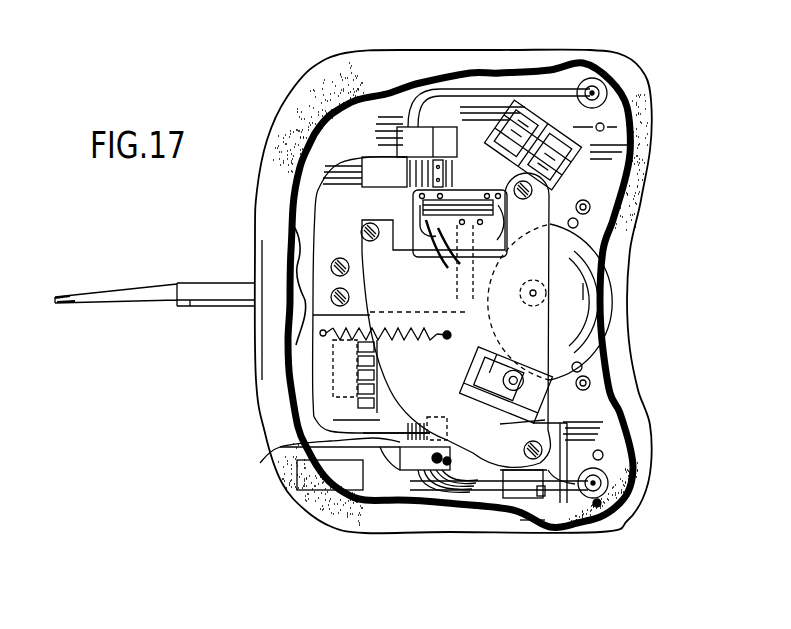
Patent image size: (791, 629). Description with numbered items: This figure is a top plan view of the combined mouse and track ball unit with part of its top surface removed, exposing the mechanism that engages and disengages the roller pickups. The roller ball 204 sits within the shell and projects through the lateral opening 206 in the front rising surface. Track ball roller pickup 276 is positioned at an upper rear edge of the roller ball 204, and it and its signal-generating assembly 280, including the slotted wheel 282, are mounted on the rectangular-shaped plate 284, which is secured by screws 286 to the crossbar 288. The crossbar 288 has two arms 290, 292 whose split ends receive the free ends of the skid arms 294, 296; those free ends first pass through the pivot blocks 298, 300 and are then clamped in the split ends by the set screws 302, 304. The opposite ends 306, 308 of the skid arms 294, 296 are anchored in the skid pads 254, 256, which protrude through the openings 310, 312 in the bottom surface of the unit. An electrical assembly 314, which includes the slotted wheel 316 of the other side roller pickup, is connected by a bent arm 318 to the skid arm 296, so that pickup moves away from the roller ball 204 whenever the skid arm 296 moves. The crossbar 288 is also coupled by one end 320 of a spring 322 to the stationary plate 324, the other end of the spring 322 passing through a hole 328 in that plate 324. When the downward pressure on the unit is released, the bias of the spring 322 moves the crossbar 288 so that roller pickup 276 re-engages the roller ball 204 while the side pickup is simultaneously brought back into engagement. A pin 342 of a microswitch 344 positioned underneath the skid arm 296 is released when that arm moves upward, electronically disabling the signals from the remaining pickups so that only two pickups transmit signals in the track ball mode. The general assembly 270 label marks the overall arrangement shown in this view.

The tool housing assembly 270 is at (62, 5).
The skid pad 254 is at (610, 523).
The skid pad 256 is at (602, 96).
The opening 312 is at (607, 103).
The opposite end of skid arm 306 is at (592, 93).
The signal-generating assembly 280 is at (470, 172).
The set screw 302 is at (428, 127).
The pivot block 298 is at (380, 150).
The arm of crossbar 290 is at (383, 170).
The crossbar 288 is at (335, 202).
The arm of crossbar 292 is at (285, 447).
The screws 286 is at (290, 262).
The rectangular-shaped plate 284 is at (305, 308).
The stationary plate 324 is at (441, 379).
The skid arm 294 is at (458, 188).
The slotted wheel 282 is at (414, 215).
The roller ball 204 is at (578, 300).
The lateral opening 206 is at (617, 254).
The track ball roller pickup 276 is at (490, 292).
The spring 322 is at (446, 334).
The hole 328 is at (450, 336).
The end of spring 320 is at (333, 390).
The electrical assembly 314 is at (560, 414).
The slotted wheel 316 is at (565, 376).
The bent arm 318 is at (566, 458).
The opening 310 is at (608, 485).
The opposite end of skid arm 308 is at (560, 505).
The microswitch 344 is at (517, 498).
The pin 342 is at (532, 522).
The set screw 304 is at (418, 450).
The skid arm 296 is at (473, 490).
The pivot block 300 is at (395, 453).